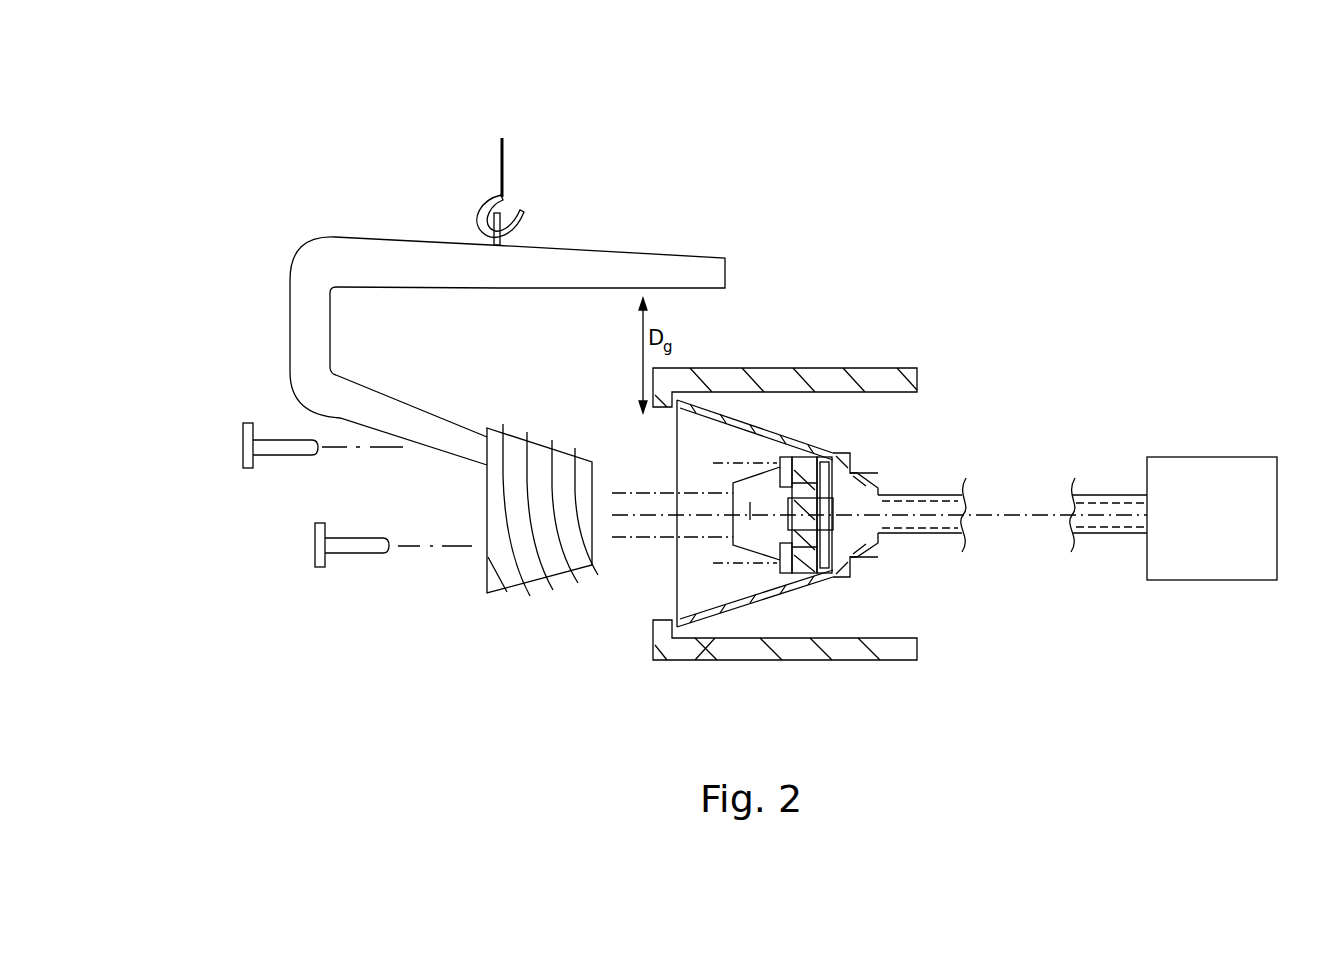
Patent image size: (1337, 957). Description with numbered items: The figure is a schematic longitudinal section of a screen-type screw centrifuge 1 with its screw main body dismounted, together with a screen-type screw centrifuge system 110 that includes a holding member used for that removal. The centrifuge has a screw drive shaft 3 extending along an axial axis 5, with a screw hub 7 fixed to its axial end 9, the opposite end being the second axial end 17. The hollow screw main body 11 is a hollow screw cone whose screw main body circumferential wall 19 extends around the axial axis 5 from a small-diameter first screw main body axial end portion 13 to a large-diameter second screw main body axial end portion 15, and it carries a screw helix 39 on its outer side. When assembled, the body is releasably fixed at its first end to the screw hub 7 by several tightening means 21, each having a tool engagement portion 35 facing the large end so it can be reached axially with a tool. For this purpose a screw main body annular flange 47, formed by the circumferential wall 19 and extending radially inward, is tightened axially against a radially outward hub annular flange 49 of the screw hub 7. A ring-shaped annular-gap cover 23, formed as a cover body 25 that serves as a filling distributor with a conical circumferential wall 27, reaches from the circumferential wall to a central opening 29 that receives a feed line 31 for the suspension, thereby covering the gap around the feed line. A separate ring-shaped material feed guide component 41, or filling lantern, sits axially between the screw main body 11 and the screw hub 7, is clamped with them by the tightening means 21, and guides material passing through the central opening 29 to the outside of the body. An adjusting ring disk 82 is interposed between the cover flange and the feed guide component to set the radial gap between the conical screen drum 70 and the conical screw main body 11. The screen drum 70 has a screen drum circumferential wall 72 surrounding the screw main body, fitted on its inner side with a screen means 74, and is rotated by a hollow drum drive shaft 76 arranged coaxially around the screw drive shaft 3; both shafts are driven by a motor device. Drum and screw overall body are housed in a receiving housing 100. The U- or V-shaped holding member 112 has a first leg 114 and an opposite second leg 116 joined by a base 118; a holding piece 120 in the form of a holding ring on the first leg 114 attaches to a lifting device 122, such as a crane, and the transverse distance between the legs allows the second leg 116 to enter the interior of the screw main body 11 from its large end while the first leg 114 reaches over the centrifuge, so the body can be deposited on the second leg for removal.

The screen-type screw centrifuge 1 is at (946, 320).
The screw drive shaft 3 is at (838, 592).
The axial axis 5 is at (1048, 518).
The screw hub 7 is at (848, 592).
The axial end 9 is at (750, 540).
The hollow screw main body 11 is at (548, 575).
The first screw main body axial end portion 13 is at (582, 470).
The second screw main body axial end portion 15 is at (503, 440).
The second axial end 17 is at (1130, 510).
The screw main body circumferential wall 19 is at (495, 593).
The tightening means 21 is at (280, 460).
The annular-gap cover 23 is at (784, 455).
The cover body 25 is at (835, 422).
The conical circumferential wall 27 is at (770, 455).
The central opening 29 is at (735, 535).
The feed line 31 is at (645, 492).
The tool engagement portion 35 is at (240, 445).
The screw helix 39 is at (530, 462).
The material feed guide component 41 is at (812, 460).
The screw main body annular flange 47 is at (797, 460).
The hub annular flange 49 is at (852, 474).
The screen drum 70 is at (683, 660).
The screen drum circumferential wall 72 is at (724, 410).
The screen means 74 is at (722, 618).
The drum drive shaft 76 is at (935, 495).
The adjusting ring disk 82 is at (790, 608).
The receiving housing 100 is at (888, 650).
The screen-type screw centrifuge system 110 is at (756, 172).
The holding member 112 is at (340, 258).
The first leg 114 is at (623, 270).
The second leg 116 is at (388, 402).
The base 118 is at (298, 333).
The holding piece 120 is at (505, 226).
The lifting device 122 is at (505, 170).